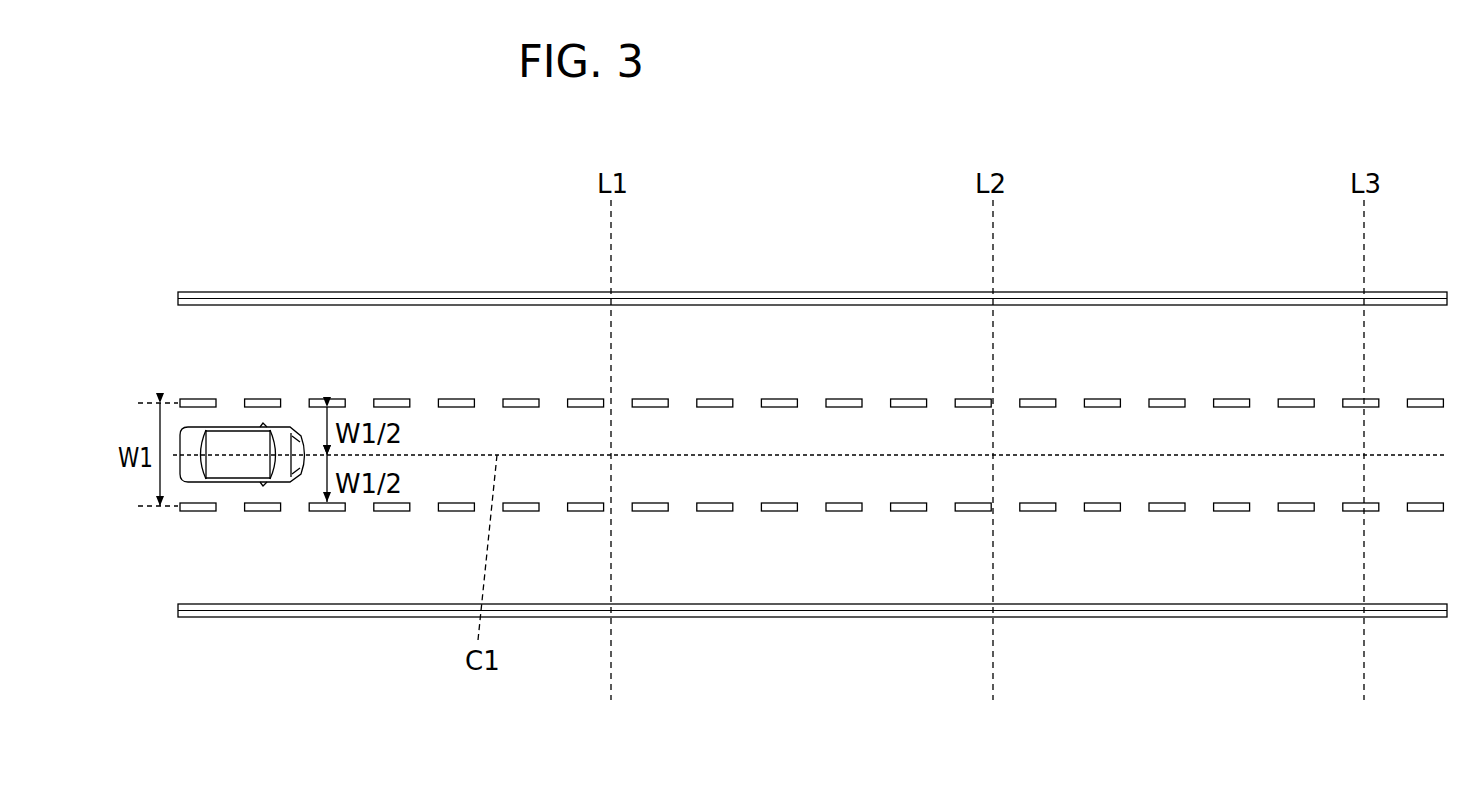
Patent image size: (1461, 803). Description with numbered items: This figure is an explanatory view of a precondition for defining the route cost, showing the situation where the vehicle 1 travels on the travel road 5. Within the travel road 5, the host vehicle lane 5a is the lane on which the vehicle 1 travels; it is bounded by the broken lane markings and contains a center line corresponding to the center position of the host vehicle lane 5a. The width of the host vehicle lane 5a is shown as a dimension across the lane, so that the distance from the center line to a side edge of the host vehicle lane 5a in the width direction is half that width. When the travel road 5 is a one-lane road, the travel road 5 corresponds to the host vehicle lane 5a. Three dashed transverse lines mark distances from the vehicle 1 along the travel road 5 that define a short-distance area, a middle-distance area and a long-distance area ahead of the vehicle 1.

The vehicle 1 is at (230, 426).
The travel road 5 is at (1093, 340).
The host vehicle lane 5a is at (455, 442).